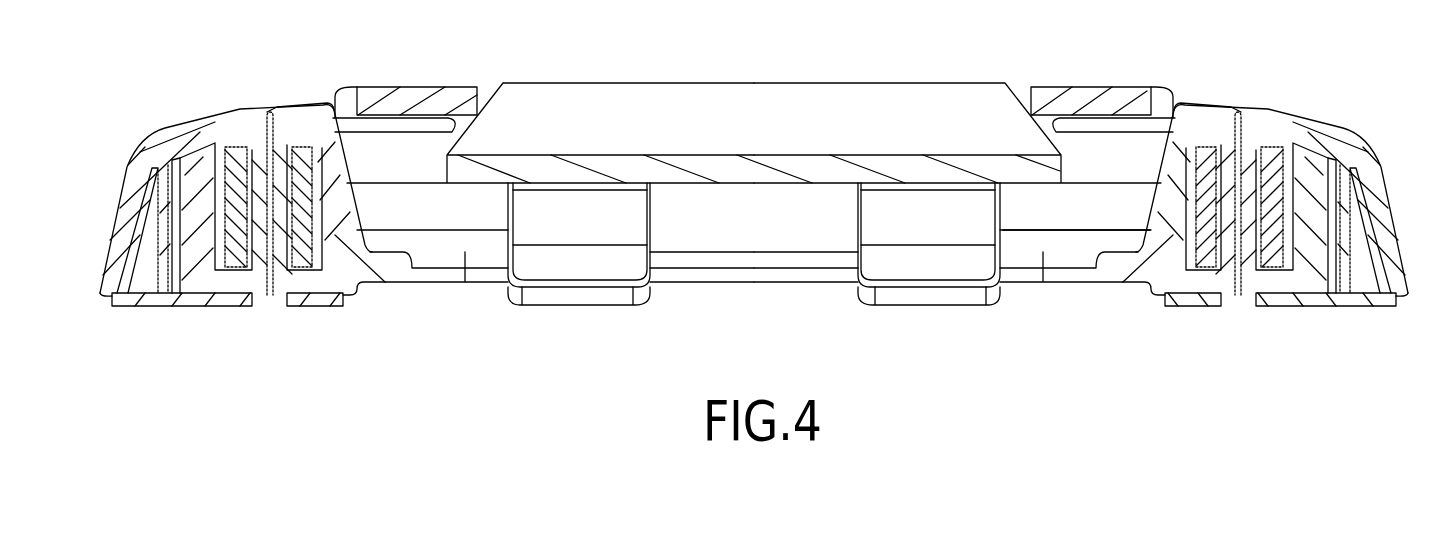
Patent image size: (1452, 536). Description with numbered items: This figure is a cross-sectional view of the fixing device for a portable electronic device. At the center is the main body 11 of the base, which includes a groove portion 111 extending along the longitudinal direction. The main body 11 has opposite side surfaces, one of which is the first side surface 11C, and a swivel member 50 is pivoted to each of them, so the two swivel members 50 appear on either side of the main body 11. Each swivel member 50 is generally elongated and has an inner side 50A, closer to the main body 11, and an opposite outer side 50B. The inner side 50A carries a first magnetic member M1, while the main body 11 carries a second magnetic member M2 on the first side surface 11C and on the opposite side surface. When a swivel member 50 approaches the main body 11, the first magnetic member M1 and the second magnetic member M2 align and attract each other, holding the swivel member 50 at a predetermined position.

The main body 11 is at (1207, 117).
The groove portion 111 is at (1045, 224).
The first side surface 11C is at (280, 295).
The swivel member 50 is at (187, 128).
The inner side 50A is at (248, 120).
The outer side 50B is at (120, 203).
The first magnetic member M1 is at (237, 247).
The second magnetic member M2 is at (300, 240).